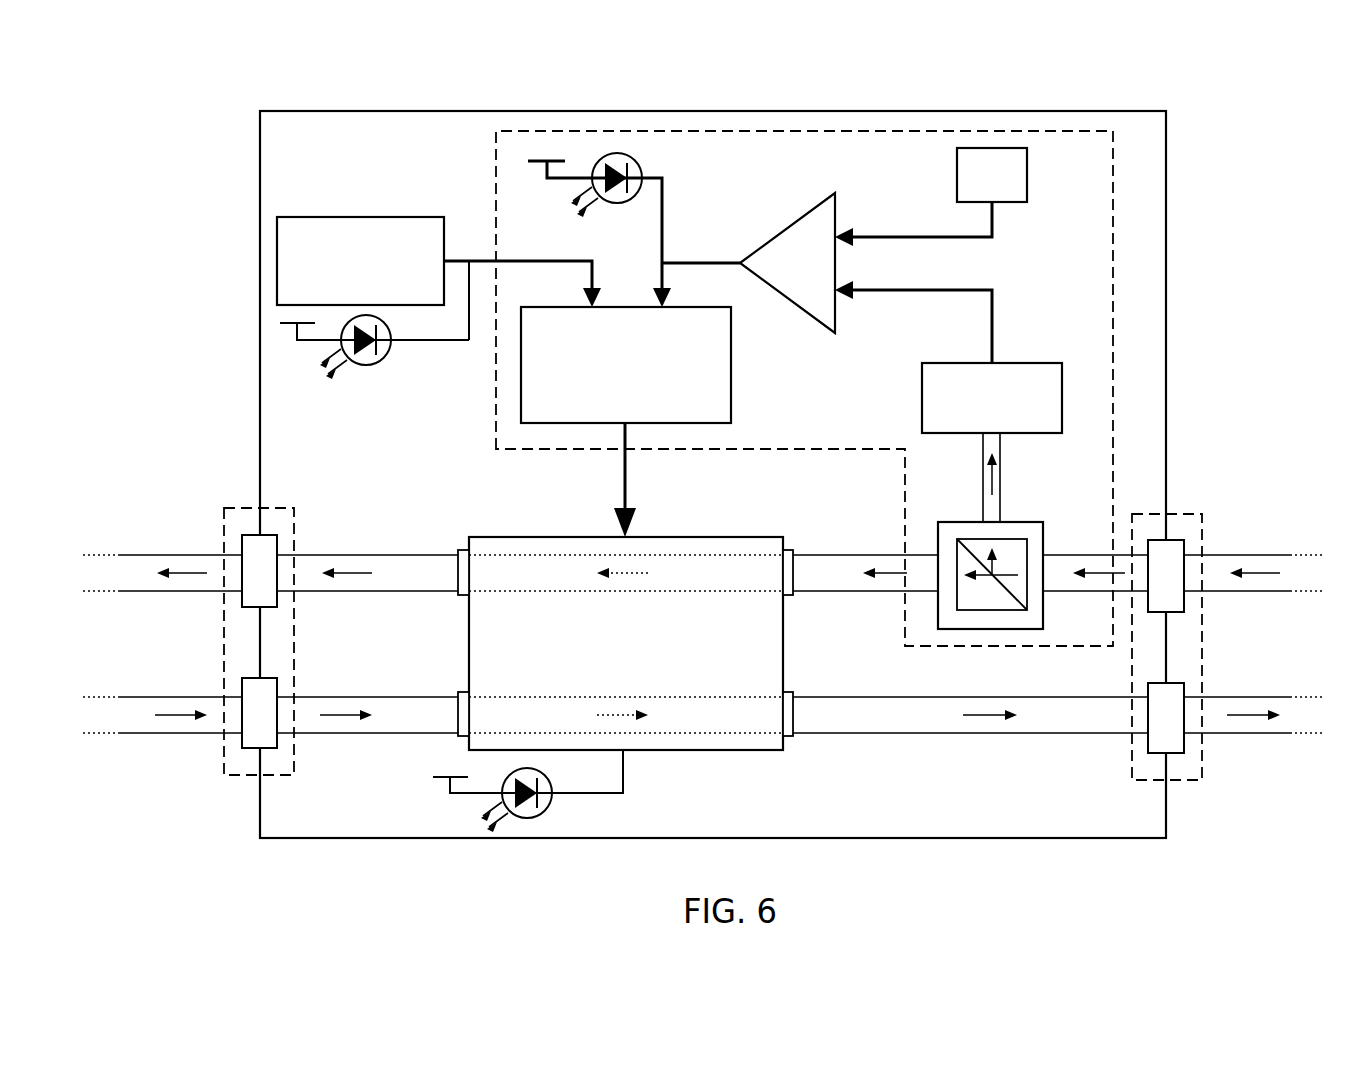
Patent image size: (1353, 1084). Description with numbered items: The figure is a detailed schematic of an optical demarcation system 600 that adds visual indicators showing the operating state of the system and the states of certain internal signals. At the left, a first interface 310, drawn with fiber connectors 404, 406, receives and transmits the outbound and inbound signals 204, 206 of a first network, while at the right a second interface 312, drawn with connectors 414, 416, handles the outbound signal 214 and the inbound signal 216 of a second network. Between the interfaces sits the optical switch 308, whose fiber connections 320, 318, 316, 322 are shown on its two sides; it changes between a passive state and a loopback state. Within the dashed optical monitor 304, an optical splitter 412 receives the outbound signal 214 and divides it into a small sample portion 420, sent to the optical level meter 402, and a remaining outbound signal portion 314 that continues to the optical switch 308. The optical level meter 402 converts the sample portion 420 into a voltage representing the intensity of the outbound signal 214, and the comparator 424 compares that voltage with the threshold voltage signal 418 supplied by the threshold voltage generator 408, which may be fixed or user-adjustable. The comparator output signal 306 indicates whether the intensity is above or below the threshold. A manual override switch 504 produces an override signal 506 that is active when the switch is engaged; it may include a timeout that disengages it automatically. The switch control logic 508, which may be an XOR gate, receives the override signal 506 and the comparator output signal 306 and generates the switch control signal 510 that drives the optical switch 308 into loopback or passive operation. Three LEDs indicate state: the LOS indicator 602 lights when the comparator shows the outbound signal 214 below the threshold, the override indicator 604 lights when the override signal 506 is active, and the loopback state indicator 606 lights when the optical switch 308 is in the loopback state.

The demarcation system 600 is at (1095, 111).
The override switch 504 is at (333, 217).
The override signal 506 is at (477, 261).
The LOS indicator 602 is at (636, 163).
The override indicator 604 is at (360, 365).
The loopback state indicator 606 is at (549, 805).
The switch control logic 508 is at (731, 385).
The optical monitor 304 is at (496, 412).
The comparator 424 is at (805, 216).
The comparator output signal 306 is at (733, 262).
The threshold voltage signal 418 is at (868, 237).
The threshold voltage generator 408 is at (1027, 175).
The optical level meter 402 is at (1045, 363).
The optical splitter 412 is at (868, 292).
The sample portion 420 is at (1000, 478).
The switch control signal 510 is at (627, 500).
The optical switch 308 is at (728, 537).
The optical switch port 320 is at (458, 550).
The optical switch port 318 is at (458, 692).
The optical switch port 316 is at (788, 550).
The optical switch port 322 is at (790, 692).
The first interface 310 is at (224, 643).
The optical connector 404 is at (242, 535).
The optical connector 406 is at (242, 748).
The second interface 312 is at (1203, 648).
The optical connector 414 is at (1185, 540).
The optical connector 416 is at (1185, 753).
The outbound signal of first network 204 is at (120, 555).
The inbound signal of first network 206 is at (120, 733).
The remaining outbound signal portion 314 is at (852, 555).
The outbound signal 214 is at (1272, 558).
The inbound signal of second network 216 is at (1272, 735).